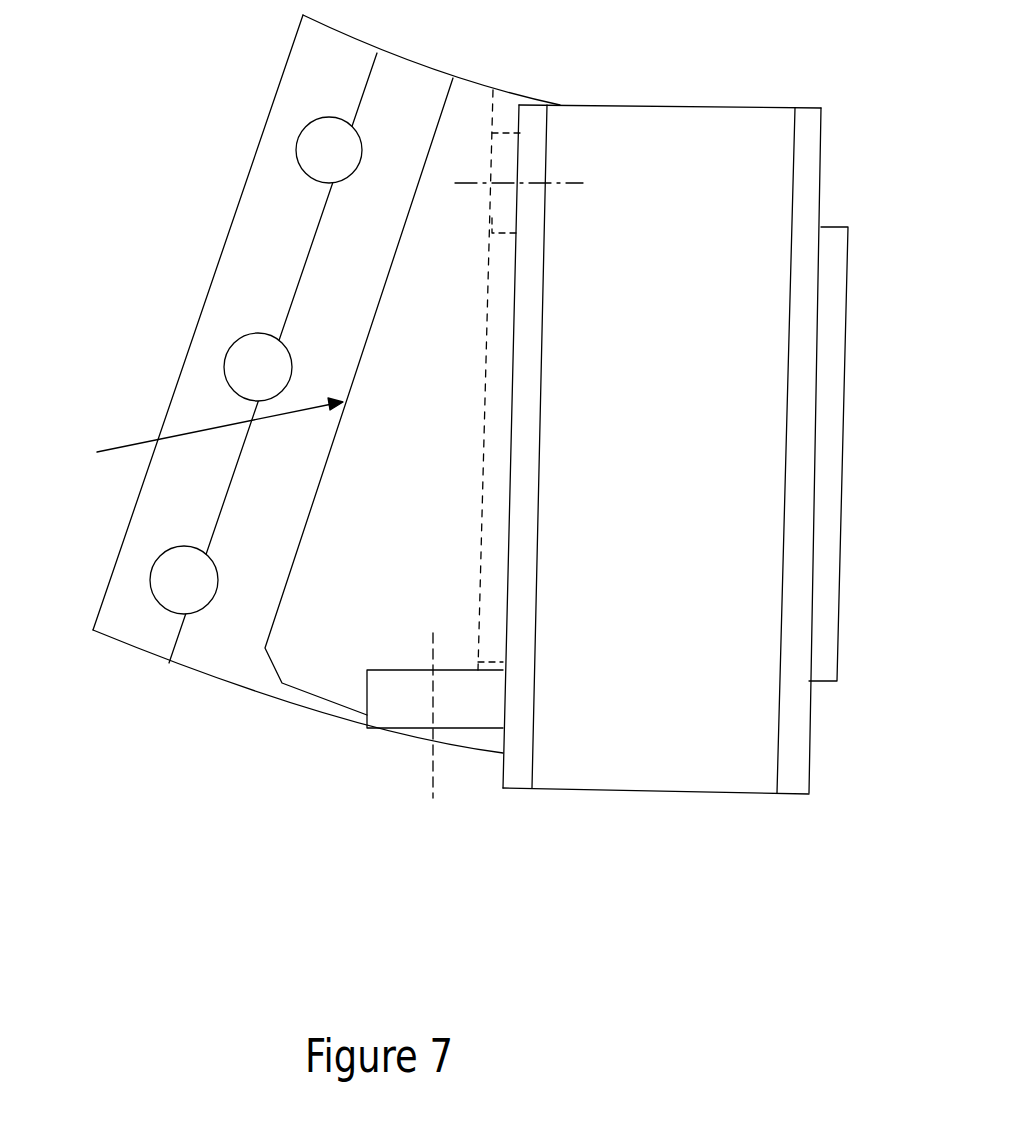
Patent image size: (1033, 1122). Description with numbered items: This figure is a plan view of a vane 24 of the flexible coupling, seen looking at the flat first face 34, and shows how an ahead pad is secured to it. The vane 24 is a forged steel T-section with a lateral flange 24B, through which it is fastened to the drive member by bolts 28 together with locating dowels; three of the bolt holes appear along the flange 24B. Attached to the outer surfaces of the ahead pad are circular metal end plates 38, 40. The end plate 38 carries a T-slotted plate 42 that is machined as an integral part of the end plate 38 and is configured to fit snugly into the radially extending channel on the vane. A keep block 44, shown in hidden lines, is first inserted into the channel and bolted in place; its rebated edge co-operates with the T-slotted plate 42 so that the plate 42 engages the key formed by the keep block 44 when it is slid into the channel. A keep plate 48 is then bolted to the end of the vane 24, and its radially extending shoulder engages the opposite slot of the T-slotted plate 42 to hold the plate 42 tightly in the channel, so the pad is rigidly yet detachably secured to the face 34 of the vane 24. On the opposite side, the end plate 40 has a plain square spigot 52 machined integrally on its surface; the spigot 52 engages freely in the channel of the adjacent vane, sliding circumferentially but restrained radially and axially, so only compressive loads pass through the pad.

The vane 24 is at (419, 478).
The lateral flange 24B is at (289, 295).
The bolts 28 is at (318, 144).
The first face 34 is at (196, 438).
The end plate 38 is at (520, 768).
The end plate 40 is at (807, 120).
The T-slotted plate 42 is at (502, 338).
The keep block 44 is at (502, 157).
The keep plate 48 is at (408, 710).
The square spigot 52 is at (831, 451).